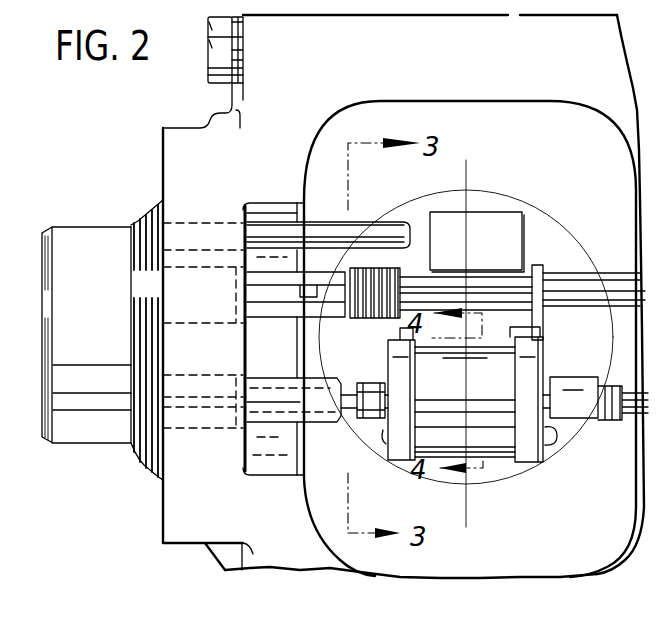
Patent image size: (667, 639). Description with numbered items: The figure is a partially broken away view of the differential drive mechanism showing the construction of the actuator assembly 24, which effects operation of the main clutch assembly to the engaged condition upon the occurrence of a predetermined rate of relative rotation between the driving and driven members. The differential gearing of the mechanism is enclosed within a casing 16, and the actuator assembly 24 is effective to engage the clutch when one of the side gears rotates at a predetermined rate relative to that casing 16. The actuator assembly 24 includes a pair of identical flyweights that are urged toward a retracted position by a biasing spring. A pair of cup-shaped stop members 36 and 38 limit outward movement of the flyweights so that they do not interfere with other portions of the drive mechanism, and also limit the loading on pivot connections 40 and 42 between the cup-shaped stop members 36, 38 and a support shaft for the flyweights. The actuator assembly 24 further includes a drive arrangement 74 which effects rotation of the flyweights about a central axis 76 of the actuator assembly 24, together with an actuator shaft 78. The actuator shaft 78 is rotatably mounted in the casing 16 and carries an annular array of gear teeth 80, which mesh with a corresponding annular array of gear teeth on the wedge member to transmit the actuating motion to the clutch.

The casing 16 is at (176, 160).
The actuator assembly 24 is at (380, 446).
The cup-shaped stop member 36 is at (403, 462).
The cup-shaped stop member 38 is at (535, 463).
The pivot connection 40 is at (383, 442).
The pivot connection 42 is at (552, 440).
The drive arrangement 74 is at (596, 362).
The central axis 76 is at (253, 390).
The actuator shaft 78 is at (560, 398).
The gear teeth 80 is at (611, 420).